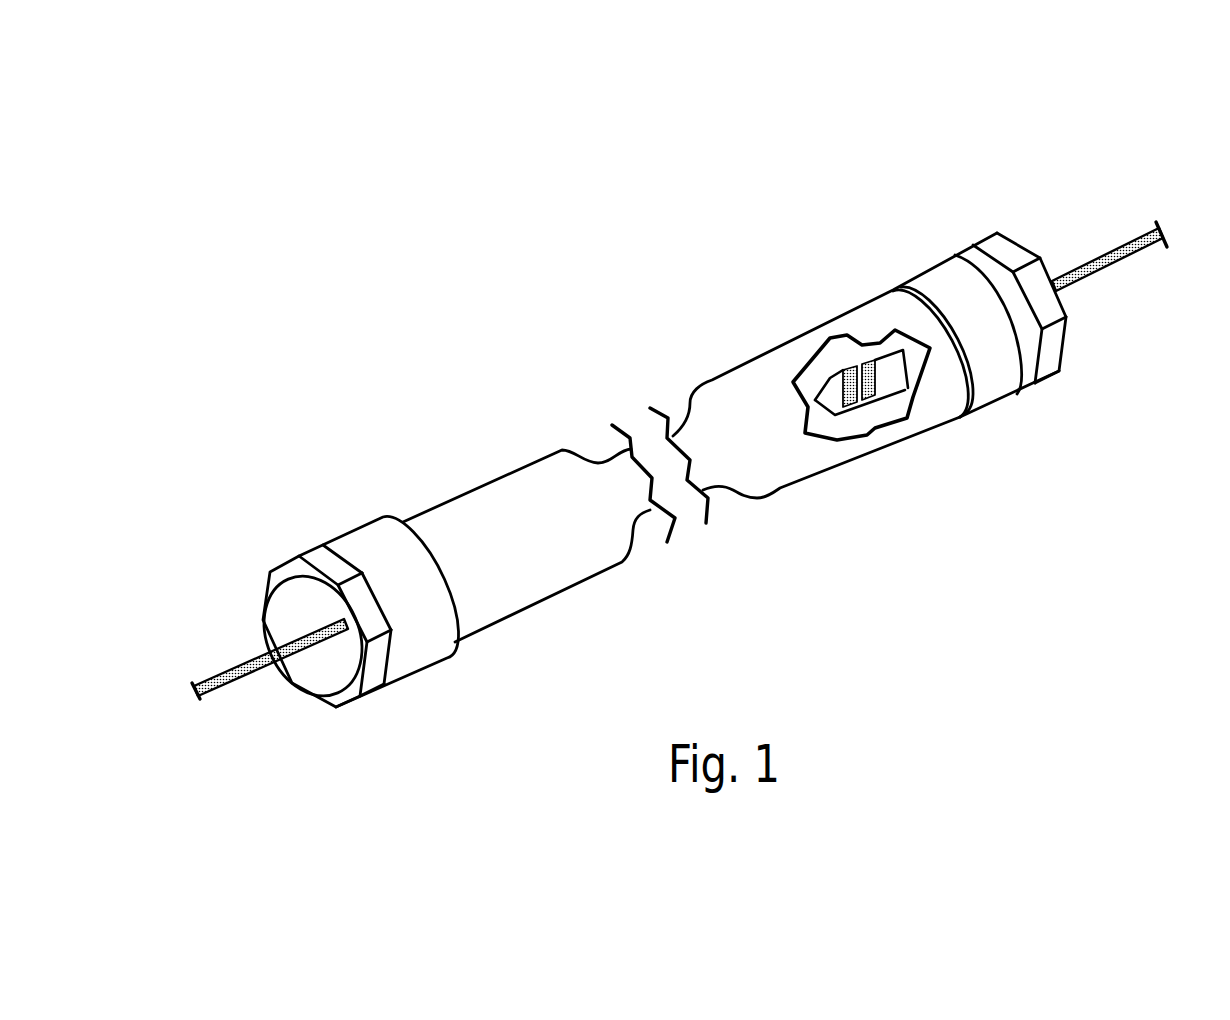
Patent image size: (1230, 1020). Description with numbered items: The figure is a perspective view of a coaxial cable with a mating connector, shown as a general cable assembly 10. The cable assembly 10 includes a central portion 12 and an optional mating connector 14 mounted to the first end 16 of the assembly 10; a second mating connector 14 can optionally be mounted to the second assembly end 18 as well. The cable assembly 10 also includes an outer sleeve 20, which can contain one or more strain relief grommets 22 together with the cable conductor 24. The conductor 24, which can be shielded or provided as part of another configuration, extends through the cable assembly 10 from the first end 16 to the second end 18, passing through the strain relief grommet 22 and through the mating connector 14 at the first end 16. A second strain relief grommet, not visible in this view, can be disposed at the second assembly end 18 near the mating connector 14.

The cable assembly 10 is at (1020, 172).
The central portion 12 is at (513, 466).
The mating connector 14 is at (362, 520).
The first end 16 is at (1046, 397).
The second assembly end 18 is at (419, 688).
The outer sleeve 20 is at (483, 543).
The strain relief grommet 22 is at (845, 355).
The cable conductor 24 is at (239, 660).